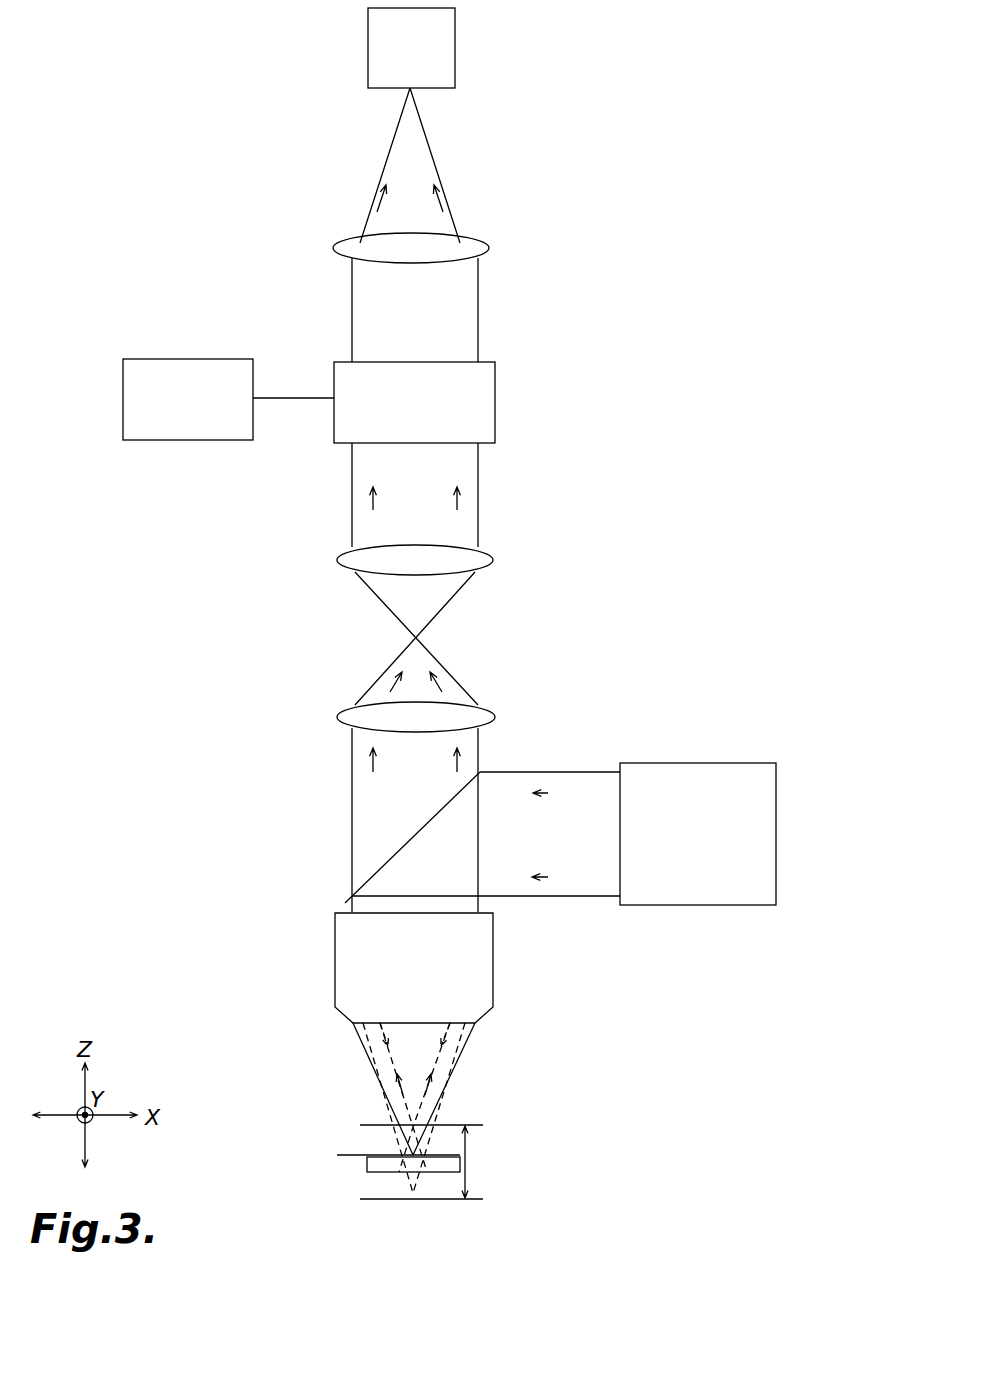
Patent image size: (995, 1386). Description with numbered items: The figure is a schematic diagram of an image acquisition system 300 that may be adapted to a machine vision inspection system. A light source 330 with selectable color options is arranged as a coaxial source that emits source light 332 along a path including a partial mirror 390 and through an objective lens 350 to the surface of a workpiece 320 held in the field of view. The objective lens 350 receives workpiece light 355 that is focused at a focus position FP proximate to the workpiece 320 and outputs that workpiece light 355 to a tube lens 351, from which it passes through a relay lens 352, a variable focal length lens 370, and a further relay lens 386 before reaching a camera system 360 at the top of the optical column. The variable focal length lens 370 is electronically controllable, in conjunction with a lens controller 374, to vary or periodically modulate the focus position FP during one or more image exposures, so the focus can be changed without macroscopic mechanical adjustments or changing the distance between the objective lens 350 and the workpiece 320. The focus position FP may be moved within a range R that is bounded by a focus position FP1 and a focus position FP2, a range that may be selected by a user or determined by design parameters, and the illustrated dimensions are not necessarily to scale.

The image acquisition system 300 is at (711, 37).
The workpiece 320 is at (367, 1163).
The light source 330 is at (737, 763).
The source light 332 is at (548, 877).
The objective lens 350 is at (493, 955).
The tube lens 351 is at (495, 717).
The relay lens 352 is at (494, 560).
The workpiece light 355 is at (379, 208).
The camera system 360 is at (455, 34).
The variable focal length lens 370 is at (495, 398).
The lens controller 374 is at (150, 440).
The relay lens 386 is at (336, 246).
The partial mirror 390 is at (368, 884).
The focus position FP is at (356, 1155).
The focus position FP1 is at (465, 1125).
The focus position FP2 is at (468, 1199).
The range R is at (465, 1145).